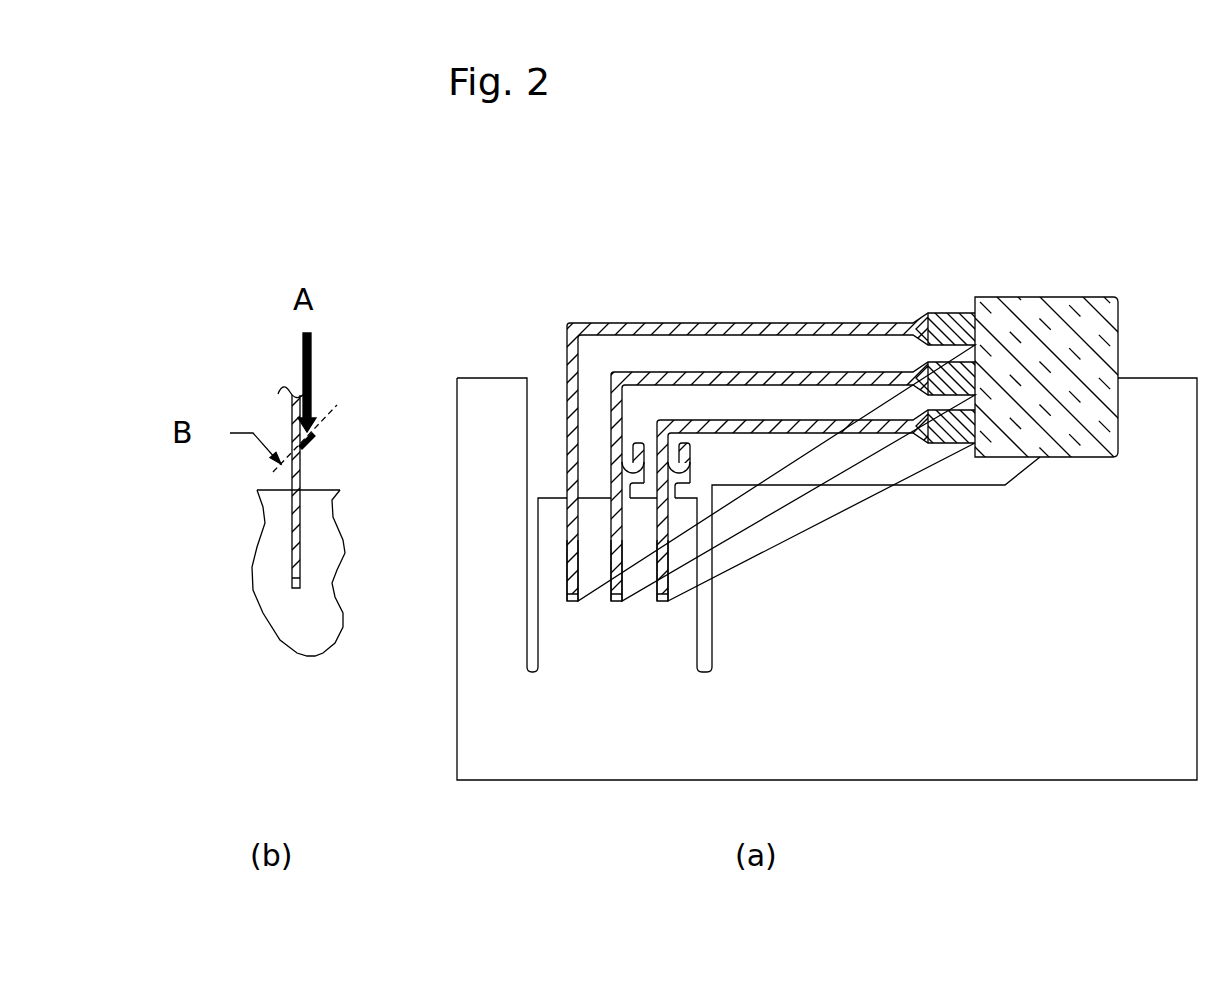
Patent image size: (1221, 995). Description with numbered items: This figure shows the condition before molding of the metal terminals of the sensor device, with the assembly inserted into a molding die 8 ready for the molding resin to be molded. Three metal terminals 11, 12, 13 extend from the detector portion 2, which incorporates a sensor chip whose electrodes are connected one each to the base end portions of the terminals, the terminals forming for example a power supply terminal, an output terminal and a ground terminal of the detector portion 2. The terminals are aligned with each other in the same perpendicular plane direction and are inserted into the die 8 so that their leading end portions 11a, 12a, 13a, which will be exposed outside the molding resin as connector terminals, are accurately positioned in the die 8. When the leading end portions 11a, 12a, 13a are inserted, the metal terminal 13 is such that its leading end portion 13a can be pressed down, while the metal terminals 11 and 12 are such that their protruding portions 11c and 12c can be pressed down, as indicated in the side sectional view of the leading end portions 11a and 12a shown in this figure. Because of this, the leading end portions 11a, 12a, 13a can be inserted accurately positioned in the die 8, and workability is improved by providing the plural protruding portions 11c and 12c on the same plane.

The detector portion 2 is at (1033, 297).
The molding die 8 is at (1045, 712).
The metal terminal 11 is at (880, 420).
The leading end portion 11a is at (668, 530).
The protruding portion 11c is at (683, 442).
The metal terminal 12 is at (832, 372).
The leading end portion 12a is at (632, 540).
The protruding portion 12c is at (638, 442).
The metal terminal 13 is at (777, 323).
The leading end portion 13a is at (582, 542).